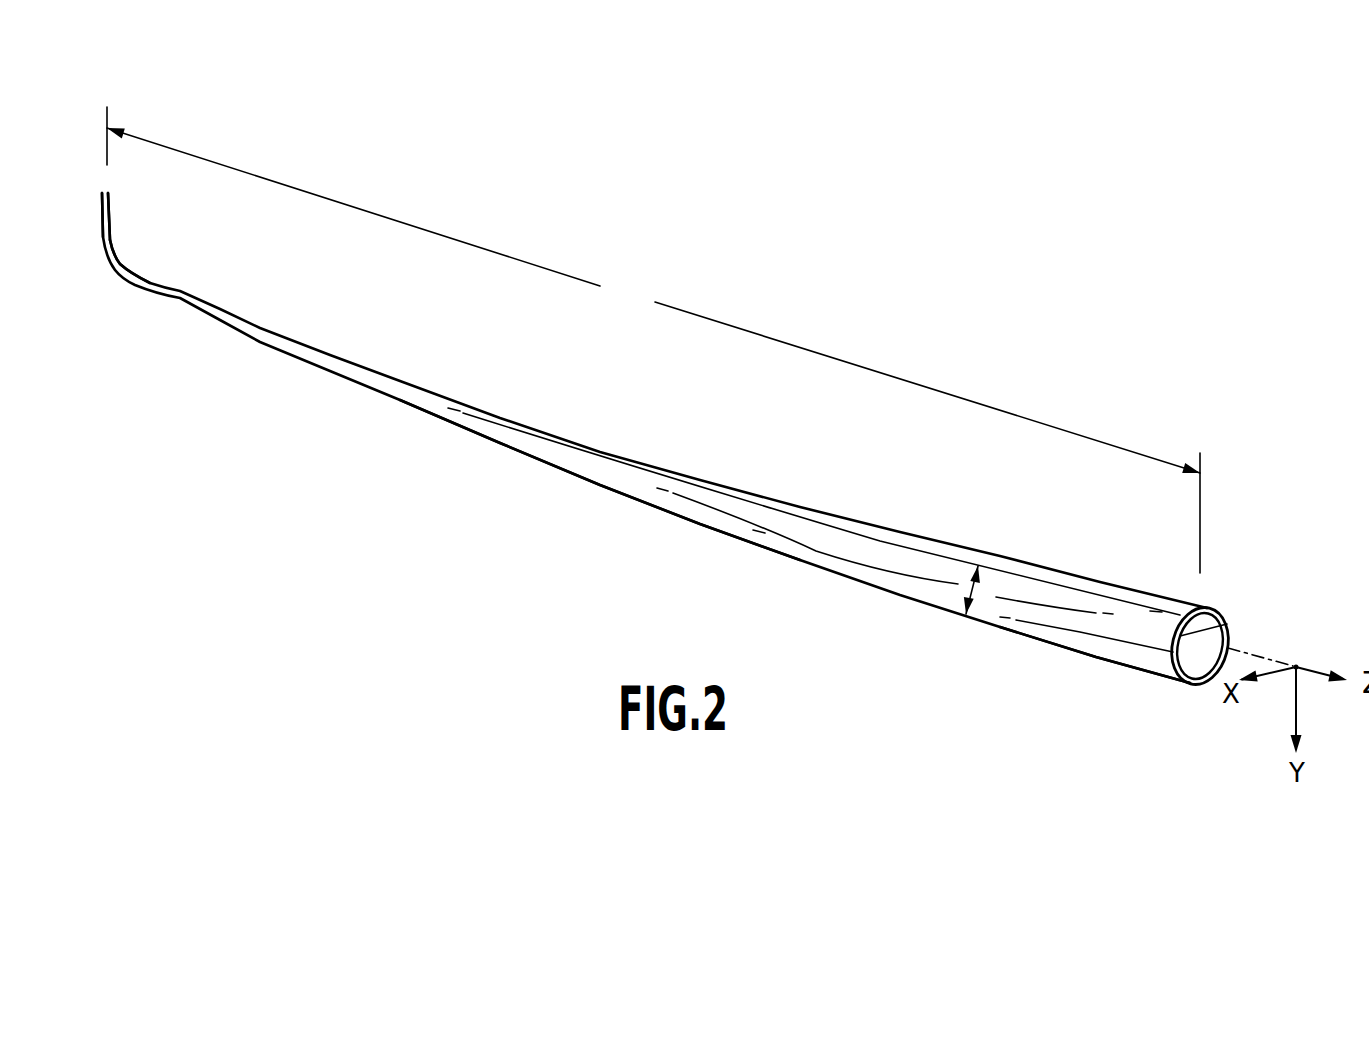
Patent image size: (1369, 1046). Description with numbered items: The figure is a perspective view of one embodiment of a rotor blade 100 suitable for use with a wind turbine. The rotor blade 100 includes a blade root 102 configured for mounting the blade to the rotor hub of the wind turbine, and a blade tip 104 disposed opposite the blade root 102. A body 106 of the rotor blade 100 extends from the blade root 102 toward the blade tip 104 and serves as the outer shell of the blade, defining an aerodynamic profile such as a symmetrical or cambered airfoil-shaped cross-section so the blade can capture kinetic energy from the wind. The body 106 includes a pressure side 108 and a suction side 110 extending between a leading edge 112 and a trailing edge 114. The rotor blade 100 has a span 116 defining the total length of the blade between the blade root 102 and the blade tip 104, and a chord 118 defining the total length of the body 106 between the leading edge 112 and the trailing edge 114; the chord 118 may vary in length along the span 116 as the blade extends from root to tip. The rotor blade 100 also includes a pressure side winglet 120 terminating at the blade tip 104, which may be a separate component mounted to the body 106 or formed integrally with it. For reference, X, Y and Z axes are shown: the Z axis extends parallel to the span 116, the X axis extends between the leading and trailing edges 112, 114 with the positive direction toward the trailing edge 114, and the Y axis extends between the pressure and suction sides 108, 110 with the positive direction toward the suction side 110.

The rotor blade 100 is at (681, 441).
The blade root 102 is at (1229, 628).
The blade tip 104 is at (104, 192).
The body 106 is at (645, 473).
The pressure side 108 is at (944, 563).
The suction side 110 is at (1110, 652).
The leading edge 112 is at (790, 510).
The trailing edge 114 is at (692, 520).
The span 116 is at (1087, 258).
The chord 118 is at (963, 585).
The pressure side winglet 120 is at (116, 268).